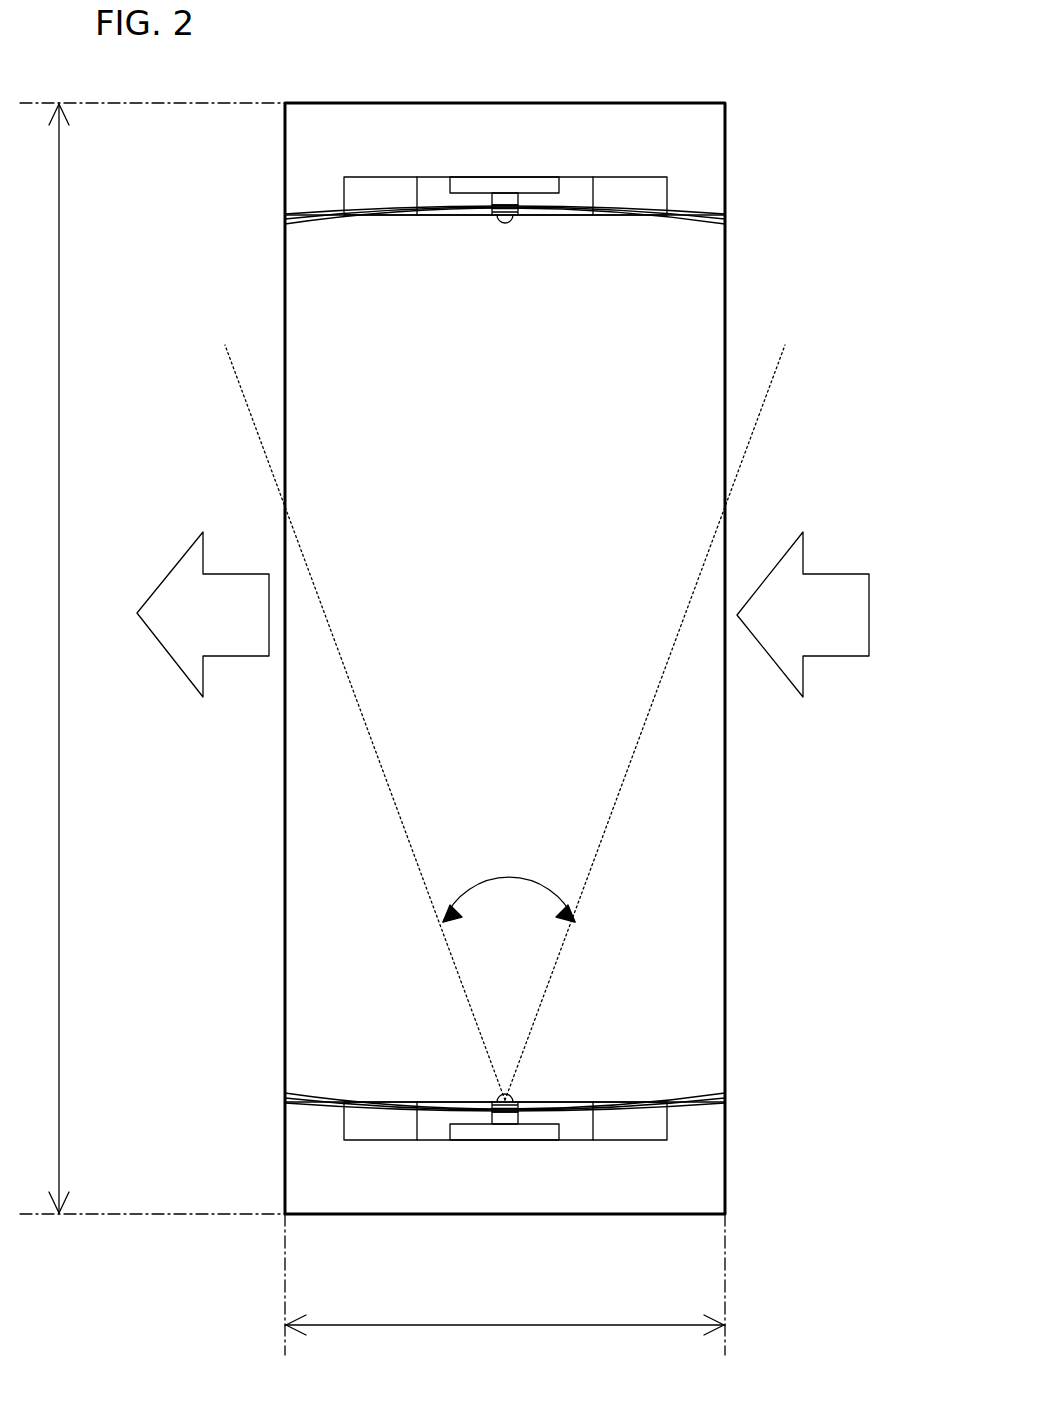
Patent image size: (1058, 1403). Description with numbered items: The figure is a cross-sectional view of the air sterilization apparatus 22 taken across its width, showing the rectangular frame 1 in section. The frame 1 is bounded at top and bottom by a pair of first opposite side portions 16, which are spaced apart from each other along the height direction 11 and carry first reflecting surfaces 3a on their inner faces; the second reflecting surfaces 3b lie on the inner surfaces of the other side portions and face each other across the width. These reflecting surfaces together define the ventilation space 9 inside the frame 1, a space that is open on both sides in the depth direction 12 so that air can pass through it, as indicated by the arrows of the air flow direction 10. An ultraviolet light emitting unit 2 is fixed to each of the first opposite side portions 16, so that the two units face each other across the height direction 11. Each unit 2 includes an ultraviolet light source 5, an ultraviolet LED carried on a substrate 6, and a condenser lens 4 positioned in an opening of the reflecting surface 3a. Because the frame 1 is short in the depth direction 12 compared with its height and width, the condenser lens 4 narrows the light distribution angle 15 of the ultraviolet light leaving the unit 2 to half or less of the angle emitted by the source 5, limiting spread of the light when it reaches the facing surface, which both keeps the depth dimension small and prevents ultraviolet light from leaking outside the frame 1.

The frame 1 is at (657, 121).
The air sterilization apparatus 22 is at (757, 106).
The first opposite side portion 16 is at (726, 175).
The first reflecting surface 3a is at (300, 222).
The second reflecting surface 3b is at (645, 318).
The ultraviolet light emitting unit 2 is at (497, 230).
The condenser lens 4 is at (509, 225).
The ultraviolet light source 5 is at (512, 195).
The substrate 6 is at (472, 1132).
The ventilation space 9 is at (603, 528).
The air flow direction 10 is at (182, 592).
The height direction 11 is at (59, 225).
The depth direction 12 is at (690, 1320).
The light distribution angle 15 is at (520, 877).